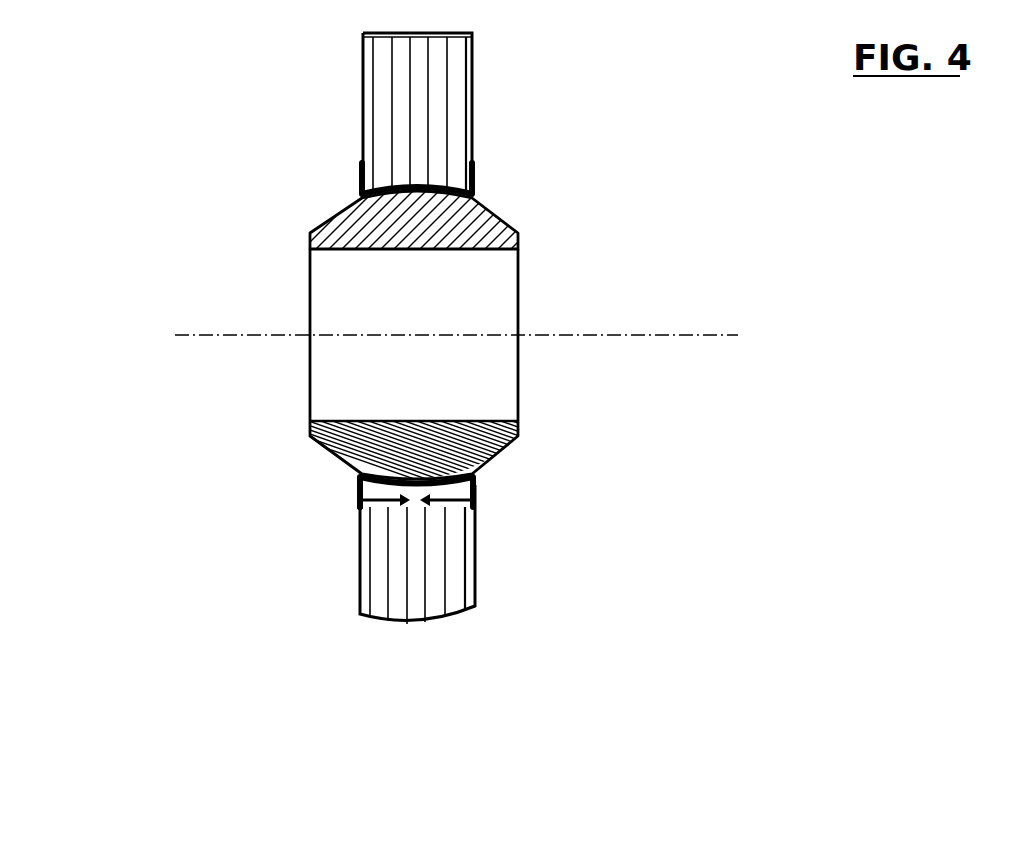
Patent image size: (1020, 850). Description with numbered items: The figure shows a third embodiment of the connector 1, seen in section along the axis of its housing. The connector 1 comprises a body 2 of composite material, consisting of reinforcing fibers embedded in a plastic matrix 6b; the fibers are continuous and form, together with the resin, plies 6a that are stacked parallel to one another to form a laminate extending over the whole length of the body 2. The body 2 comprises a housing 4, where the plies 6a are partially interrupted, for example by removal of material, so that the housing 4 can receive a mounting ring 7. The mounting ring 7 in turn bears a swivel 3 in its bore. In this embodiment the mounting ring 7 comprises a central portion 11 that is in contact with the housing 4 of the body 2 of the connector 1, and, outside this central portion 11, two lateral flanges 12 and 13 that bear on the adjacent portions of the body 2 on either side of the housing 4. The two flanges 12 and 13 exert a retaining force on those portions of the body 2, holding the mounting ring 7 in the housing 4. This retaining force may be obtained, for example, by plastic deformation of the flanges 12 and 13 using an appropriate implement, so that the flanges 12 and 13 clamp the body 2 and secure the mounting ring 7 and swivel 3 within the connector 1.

The connector 1 is at (112, 164).
The body 2 is at (434, 600).
The swivel 3 is at (478, 228).
The housing 4 is at (400, 225).
The plies 6a is at (437, 64).
The plastic matrix 6b is at (440, 113).
The mounting ring 7 is at (410, 205).
The central portion 11 is at (410, 487).
The lateral flange 12 is at (478, 492).
The lateral flange 13 is at (358, 492).